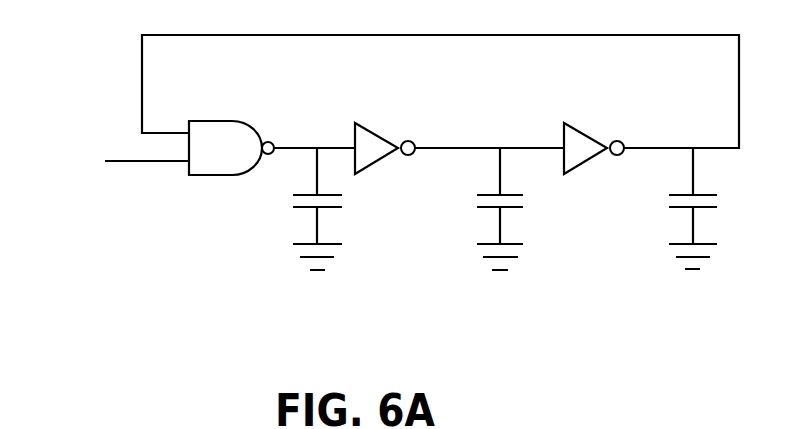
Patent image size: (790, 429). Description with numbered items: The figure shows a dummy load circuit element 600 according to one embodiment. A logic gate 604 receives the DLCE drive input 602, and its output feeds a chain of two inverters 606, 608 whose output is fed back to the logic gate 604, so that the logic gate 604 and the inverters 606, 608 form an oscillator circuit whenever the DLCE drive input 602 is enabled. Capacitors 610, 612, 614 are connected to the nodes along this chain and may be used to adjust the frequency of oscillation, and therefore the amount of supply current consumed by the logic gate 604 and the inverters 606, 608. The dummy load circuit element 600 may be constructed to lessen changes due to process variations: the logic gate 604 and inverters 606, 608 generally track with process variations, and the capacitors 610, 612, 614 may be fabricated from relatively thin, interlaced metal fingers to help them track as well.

The dummy load circuit element 600 is at (153, 286).
The DLCE drive input 602 is at (152, 163).
The logic gate 604 is at (238, 120).
The inverter 606 is at (377, 131).
The inverter 608 is at (583, 131).
The capacitor 610 is at (343, 197).
The capacitor 612 is at (530, 197).
The capacitor 614 is at (722, 198).